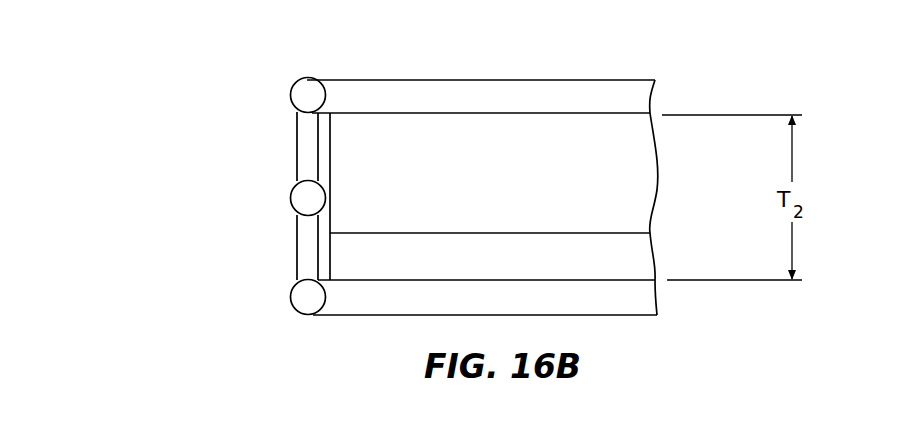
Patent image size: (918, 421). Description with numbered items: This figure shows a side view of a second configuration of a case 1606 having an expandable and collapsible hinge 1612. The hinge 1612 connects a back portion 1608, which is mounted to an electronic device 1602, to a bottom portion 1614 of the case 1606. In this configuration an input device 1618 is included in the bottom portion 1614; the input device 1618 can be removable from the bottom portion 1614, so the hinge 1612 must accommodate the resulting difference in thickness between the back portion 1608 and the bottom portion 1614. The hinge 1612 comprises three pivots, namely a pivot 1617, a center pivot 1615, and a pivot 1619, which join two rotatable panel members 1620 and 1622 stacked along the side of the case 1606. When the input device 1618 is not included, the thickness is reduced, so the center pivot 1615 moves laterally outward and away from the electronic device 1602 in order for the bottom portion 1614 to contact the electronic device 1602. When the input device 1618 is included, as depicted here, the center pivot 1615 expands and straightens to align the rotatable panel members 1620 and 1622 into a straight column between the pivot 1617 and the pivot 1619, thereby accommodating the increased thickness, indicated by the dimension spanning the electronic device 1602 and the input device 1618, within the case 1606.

The hinge 1612 is at (235, 188).
The case 1606 is at (567, 80).
The back portion 1608 is at (485, 89).
The electronic device 1602 is at (640, 178).
The input device 1618 is at (640, 257).
The bottom portion 1614 is at (645, 298).
The pivot 1617 is at (308, 95).
The center pivot 1615 is at (291, 206).
The pivot 1619 is at (308, 297).
The rotatable panel member 1620 is at (297, 150).
The rotatable panel member 1622 is at (297, 250).